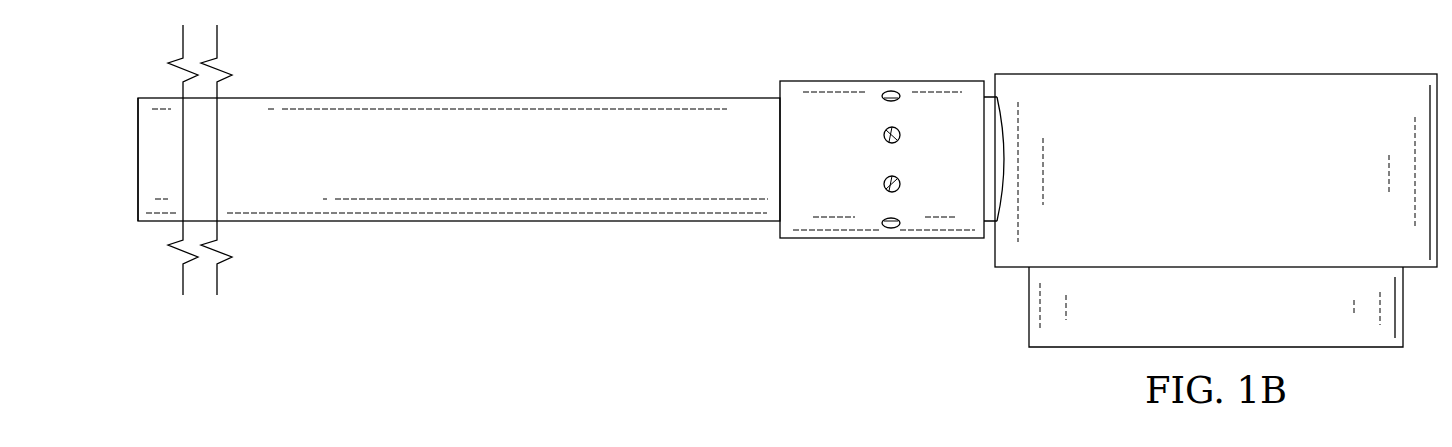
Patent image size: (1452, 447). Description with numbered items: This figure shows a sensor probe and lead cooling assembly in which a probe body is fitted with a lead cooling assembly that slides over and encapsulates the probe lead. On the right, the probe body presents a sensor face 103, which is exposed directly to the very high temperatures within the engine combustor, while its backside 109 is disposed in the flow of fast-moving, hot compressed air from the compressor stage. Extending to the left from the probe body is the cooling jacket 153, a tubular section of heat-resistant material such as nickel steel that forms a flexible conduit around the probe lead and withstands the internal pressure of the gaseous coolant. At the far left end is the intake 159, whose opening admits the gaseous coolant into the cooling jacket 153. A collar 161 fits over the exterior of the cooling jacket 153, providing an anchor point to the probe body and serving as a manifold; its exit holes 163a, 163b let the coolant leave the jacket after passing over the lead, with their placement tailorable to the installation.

The sensor face 103 is at (1360, 354).
The backside 109 is at (1216, 70).
The cooling jacket 153 is at (486, 94).
The intake 159 is at (137, 160).
The collar 161 is at (930, 77).
The exit hole 163a is at (885, 133).
The exit hole 163b is at (885, 186).